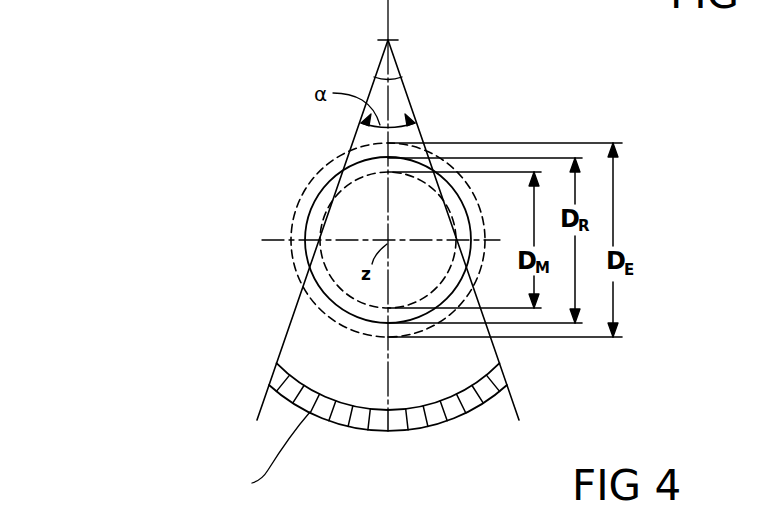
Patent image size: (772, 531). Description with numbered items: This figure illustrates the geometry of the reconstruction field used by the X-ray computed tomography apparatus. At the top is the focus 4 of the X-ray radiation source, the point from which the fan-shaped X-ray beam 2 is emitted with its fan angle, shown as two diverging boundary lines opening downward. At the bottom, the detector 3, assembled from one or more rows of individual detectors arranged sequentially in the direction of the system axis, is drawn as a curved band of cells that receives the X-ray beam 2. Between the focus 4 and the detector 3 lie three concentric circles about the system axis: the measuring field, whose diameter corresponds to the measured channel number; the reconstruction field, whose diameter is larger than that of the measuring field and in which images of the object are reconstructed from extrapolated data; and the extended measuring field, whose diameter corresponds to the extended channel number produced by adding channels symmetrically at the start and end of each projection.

The X-ray beam 2 is at (410, 95).
The detector 3 is at (327, 422).
The focus 4 is at (388, 40).